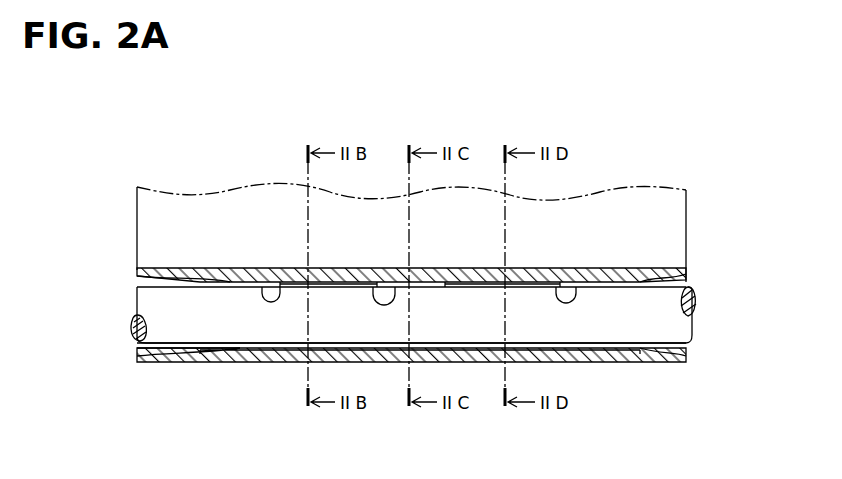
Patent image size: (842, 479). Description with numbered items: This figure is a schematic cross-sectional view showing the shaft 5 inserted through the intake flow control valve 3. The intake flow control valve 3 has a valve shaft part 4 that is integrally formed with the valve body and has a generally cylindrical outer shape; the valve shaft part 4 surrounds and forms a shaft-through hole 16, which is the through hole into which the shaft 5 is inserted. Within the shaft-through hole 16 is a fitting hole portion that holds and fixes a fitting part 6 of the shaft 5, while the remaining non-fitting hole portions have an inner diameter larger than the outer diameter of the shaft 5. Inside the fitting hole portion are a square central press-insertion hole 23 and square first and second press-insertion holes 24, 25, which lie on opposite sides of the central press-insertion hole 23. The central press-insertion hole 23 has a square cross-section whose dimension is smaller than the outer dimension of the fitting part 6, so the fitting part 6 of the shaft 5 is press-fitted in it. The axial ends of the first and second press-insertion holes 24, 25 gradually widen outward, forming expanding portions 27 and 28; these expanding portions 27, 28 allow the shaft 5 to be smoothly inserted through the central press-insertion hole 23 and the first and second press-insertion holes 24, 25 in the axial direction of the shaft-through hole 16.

The intake flow control valve 3 is at (185, 205).
The valve shaft part 4 is at (262, 363).
The shaft 5 is at (688, 326).
The fitting part 6 is at (558, 329).
The shaft-through hole 16 is at (146, 351).
The central press-insertion hole 23 is at (374, 282).
The first press-insertion hole 24 is at (268, 282).
The second press-insertion hole 25 is at (584, 282).
The expanding portion 27 is at (146, 275).
The expanding portion 28 is at (684, 281).